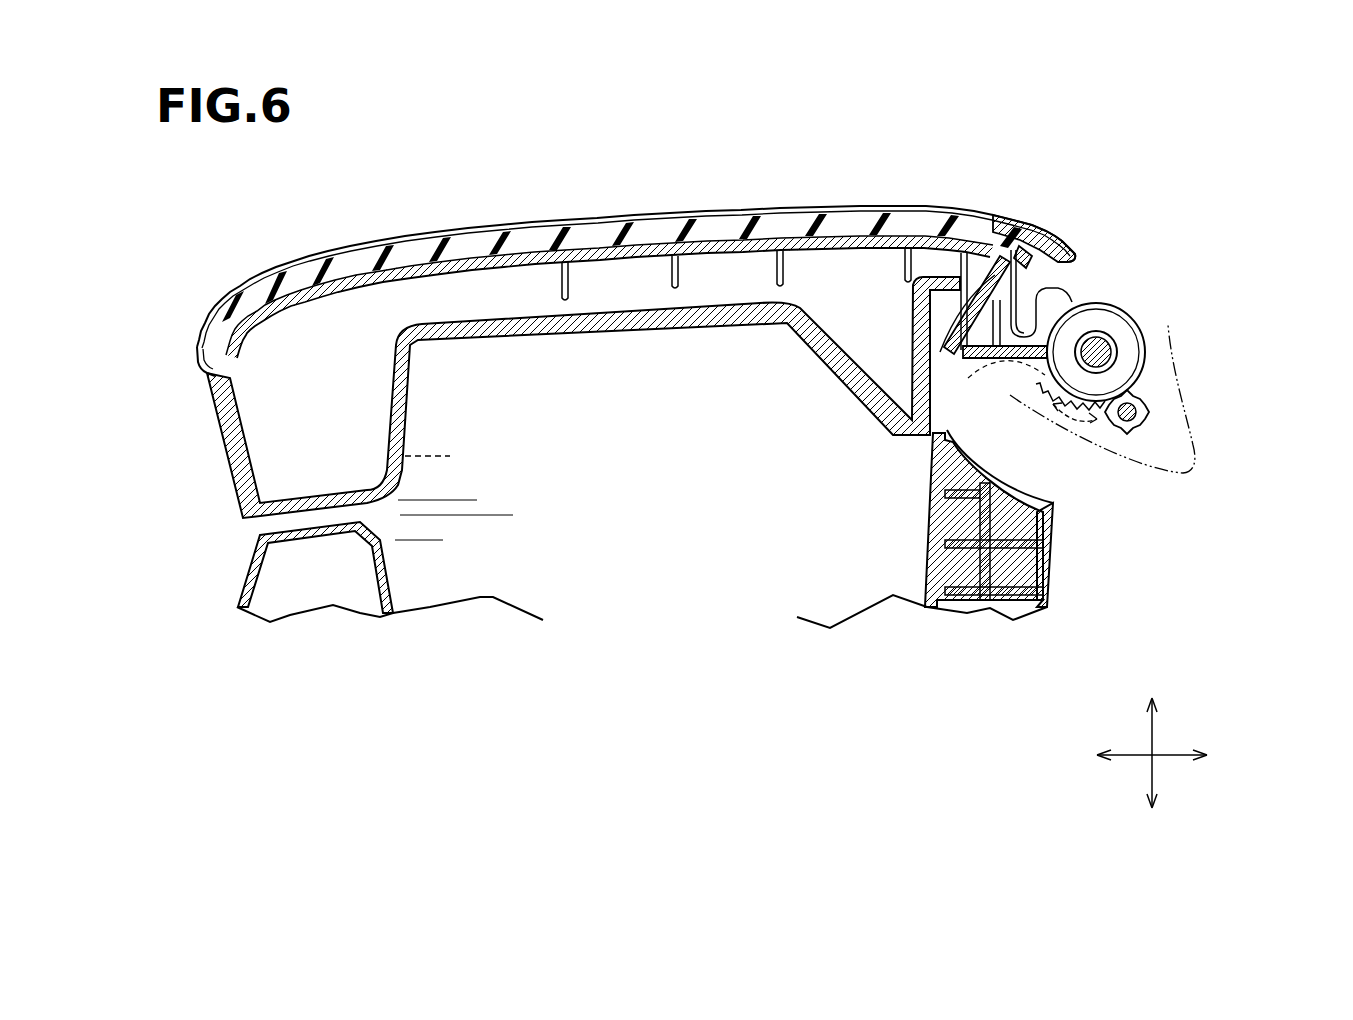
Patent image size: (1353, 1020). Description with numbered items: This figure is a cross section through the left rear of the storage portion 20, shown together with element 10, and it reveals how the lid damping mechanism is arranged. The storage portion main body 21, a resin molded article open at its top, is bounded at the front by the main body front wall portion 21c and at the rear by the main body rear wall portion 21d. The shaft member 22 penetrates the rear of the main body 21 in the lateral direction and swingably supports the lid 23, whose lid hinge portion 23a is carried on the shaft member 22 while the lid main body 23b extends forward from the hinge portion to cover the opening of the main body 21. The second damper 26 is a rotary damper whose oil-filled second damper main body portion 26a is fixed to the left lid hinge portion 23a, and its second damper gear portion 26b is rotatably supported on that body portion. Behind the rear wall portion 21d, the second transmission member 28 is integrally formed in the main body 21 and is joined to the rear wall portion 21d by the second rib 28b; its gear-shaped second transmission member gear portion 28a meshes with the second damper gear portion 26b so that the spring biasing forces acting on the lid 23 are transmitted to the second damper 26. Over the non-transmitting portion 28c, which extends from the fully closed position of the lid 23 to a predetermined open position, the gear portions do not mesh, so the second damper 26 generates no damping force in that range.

The vehicle interior structure 10 is at (699, 437).
The storage portion 20 is at (1046, 119).
The storage portion main body 21 is at (320, 572).
The main body front wall portion 21c is at (250, 563).
The main body rear wall portion 21d is at (1055, 553).
The shaft member 22 is at (1108, 335).
The lid 23 is at (636, 260).
The lid hinge portion 23a is at (1193, 458).
The lid main body 23b is at (515, 226).
The second damper 26 is at (1225, 318).
The second damper main body portion 26a is at (1153, 418).
The second damper gear portion 26b is at (1140, 402).
The second transmission member 28 is at (1097, 298).
The second transmission member gear portion 28a is at (1016, 395).
The second rib 28b is at (945, 382).
The non-transmitting portion 28c is at (1137, 385).